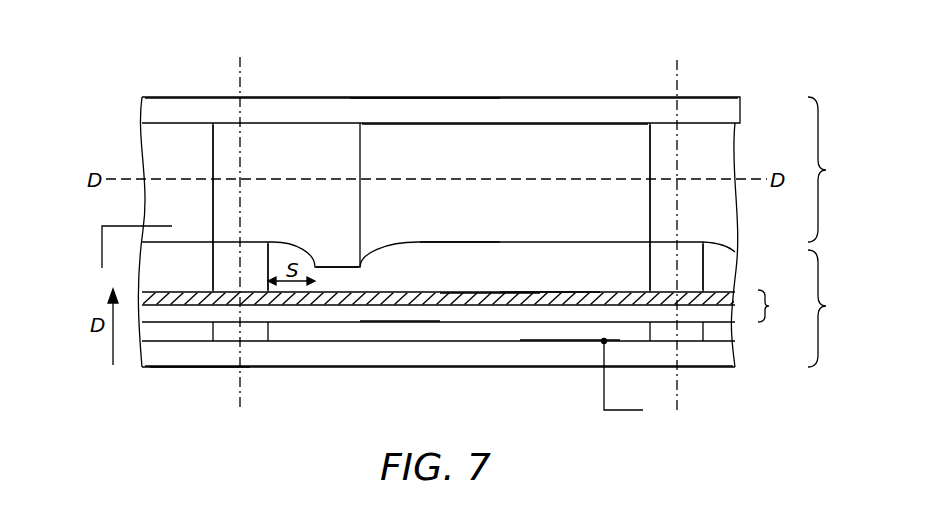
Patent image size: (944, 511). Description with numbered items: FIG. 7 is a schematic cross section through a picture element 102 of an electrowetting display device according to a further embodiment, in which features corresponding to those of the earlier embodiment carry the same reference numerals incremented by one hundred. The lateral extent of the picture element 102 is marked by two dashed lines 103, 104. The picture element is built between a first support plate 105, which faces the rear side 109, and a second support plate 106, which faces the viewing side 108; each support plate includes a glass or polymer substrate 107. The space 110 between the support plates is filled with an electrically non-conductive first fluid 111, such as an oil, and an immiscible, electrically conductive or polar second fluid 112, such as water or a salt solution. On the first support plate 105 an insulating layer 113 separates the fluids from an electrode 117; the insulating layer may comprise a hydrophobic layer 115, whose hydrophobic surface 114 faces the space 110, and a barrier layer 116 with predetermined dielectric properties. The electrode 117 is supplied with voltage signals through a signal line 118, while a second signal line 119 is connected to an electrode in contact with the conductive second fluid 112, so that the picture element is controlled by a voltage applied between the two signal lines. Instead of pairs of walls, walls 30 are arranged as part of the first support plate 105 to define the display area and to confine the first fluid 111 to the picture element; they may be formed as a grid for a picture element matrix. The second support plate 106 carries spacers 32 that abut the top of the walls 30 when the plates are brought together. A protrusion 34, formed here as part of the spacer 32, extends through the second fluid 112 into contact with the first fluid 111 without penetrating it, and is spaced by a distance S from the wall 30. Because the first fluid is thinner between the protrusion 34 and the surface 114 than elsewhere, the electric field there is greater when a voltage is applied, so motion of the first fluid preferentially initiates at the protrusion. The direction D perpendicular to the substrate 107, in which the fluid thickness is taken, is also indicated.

The picture element 102 is at (494, 84).
The dashed line 103 is at (243, 65).
The dashed line 104 is at (677, 65).
The first support plate 105 is at (838, 308).
The second support plate 106 is at (838, 169).
The substrate 107 is at (712, 105).
The viewing side 108 is at (352, 97).
The rear side 109 is at (165, 368).
The space 110 is at (430, 135).
The first fluid 111 is at (465, 252).
The second fluid 112 is at (548, 190).
The insulating layer 113 is at (784, 306).
The hydrophobic surface 114 is at (545, 290).
The hydrophobic layer 115 is at (487, 298).
The barrier layer 116 is at (395, 316).
The electrode 117 is at (567, 332).
The signal line 118 is at (623, 412).
The second signal line 119 is at (102, 246).
The walls 30 is at (258, 245).
The spacers 32 is at (227, 132).
The protrusion 34 is at (337, 245).